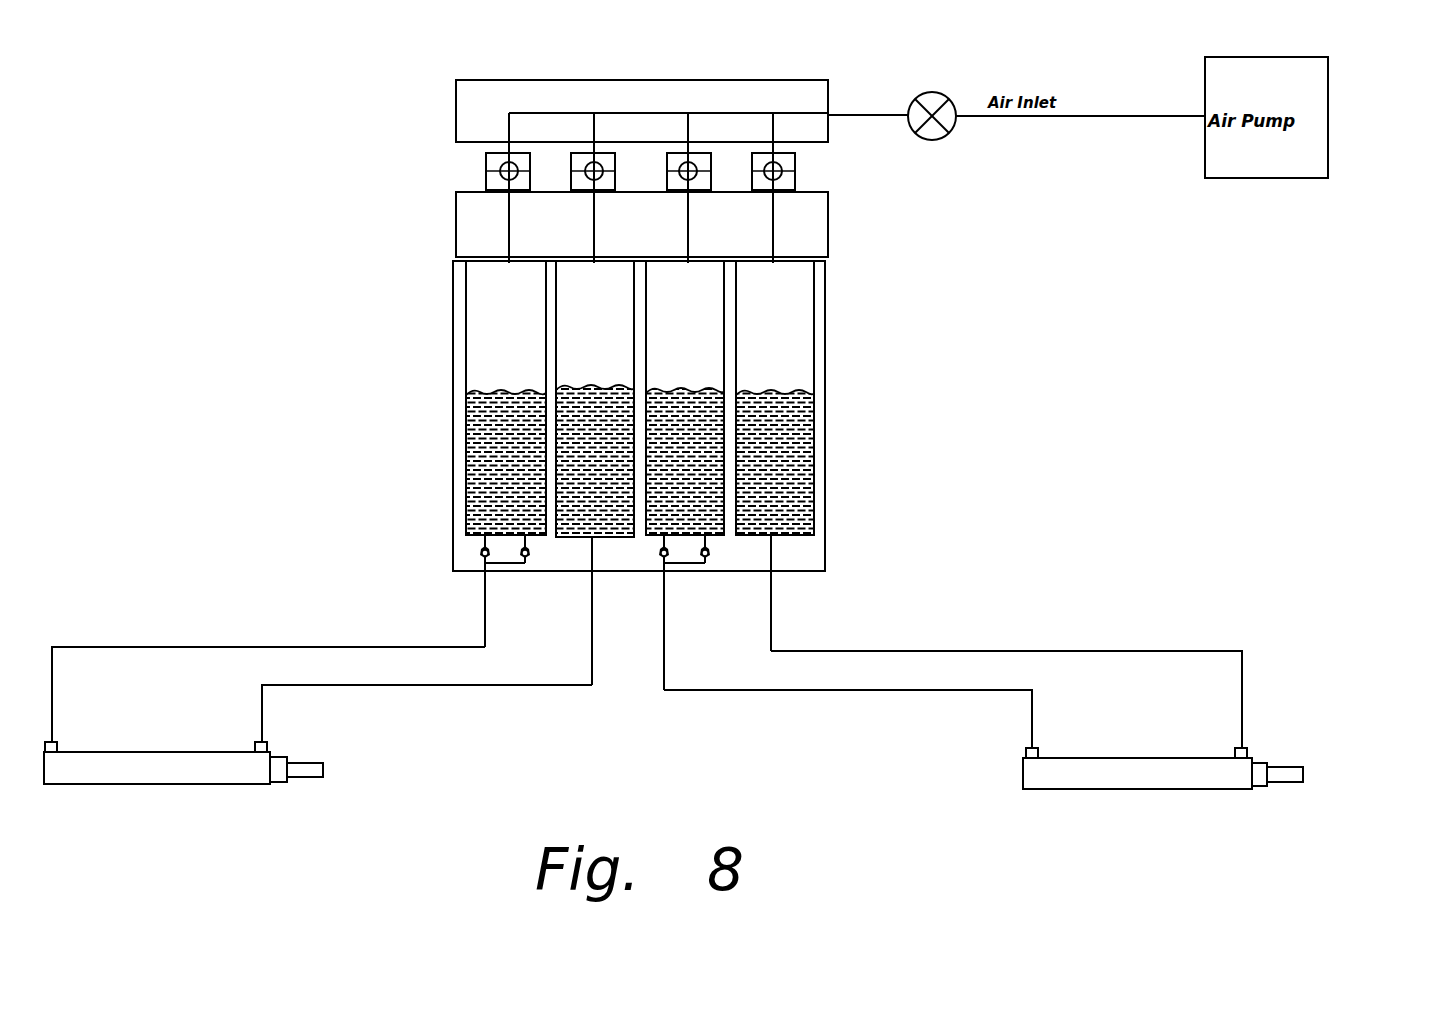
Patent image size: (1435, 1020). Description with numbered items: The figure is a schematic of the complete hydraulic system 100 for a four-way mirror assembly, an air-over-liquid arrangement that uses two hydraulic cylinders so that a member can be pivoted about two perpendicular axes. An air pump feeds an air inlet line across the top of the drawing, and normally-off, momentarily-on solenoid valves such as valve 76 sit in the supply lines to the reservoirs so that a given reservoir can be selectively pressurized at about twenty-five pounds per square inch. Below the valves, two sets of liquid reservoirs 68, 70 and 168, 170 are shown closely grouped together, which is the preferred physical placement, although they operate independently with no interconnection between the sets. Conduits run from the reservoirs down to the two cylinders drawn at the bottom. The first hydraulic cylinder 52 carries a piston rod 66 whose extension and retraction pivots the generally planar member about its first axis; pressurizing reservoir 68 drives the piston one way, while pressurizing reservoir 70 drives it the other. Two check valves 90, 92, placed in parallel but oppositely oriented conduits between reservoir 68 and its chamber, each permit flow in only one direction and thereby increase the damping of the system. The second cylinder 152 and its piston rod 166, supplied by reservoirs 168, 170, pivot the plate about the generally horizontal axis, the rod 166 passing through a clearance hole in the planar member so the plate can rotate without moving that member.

The first hydraulic cylinder 52 is at (178, 784).
The piston rod 66 is at (302, 762).
The reservoir 68 is at (522, 333).
The reservoir 70 is at (613, 355).
The solenoid valve 76 is at (487, 180).
The check valve 90 is at (532, 557).
The check valve 92 is at (477, 552).
The hydraulic system 100 is at (953, 412).
The second cylinder 152 is at (1159, 791).
The piston rod 166 is at (1290, 770).
The reservoir 168 is at (711, 337).
The reservoir 170 is at (802, 356).